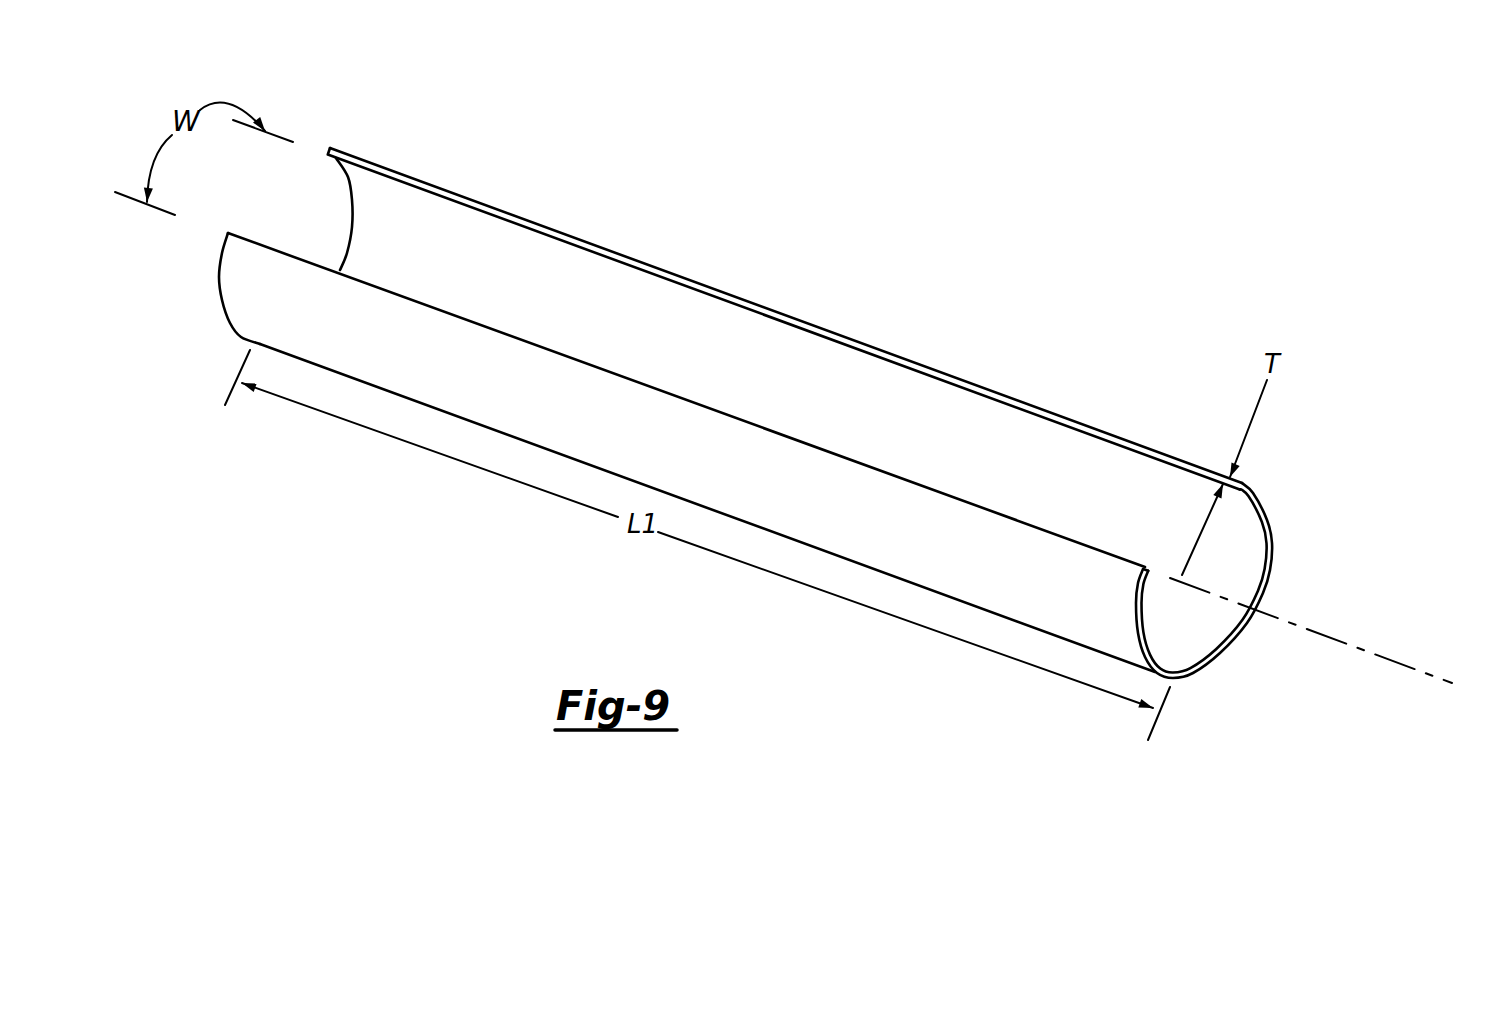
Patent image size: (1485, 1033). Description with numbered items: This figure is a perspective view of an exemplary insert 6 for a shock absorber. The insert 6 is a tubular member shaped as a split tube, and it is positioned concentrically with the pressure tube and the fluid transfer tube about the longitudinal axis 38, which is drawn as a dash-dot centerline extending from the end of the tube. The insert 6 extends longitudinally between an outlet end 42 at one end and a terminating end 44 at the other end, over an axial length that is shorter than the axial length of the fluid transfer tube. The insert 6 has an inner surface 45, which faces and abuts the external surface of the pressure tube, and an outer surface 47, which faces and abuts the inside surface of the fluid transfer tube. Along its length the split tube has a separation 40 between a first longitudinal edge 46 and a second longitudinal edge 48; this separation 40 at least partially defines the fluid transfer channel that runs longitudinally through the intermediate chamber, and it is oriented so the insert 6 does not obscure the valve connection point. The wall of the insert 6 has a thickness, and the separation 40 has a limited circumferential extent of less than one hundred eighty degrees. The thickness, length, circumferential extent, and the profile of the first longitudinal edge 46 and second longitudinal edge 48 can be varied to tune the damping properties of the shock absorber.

The insert 6 is at (1088, 237).
The longitudinal axis 38 is at (1277, 620).
The separation 40 is at (308, 194).
The outlet end 42 is at (222, 300).
The terminating end 44 is at (1270, 567).
The inner surface 45 is at (1078, 473).
The first longitudinal edge 46 is at (936, 367).
The outer surface 47 is at (1043, 608).
The second longitudinal edge 48 is at (655, 387).